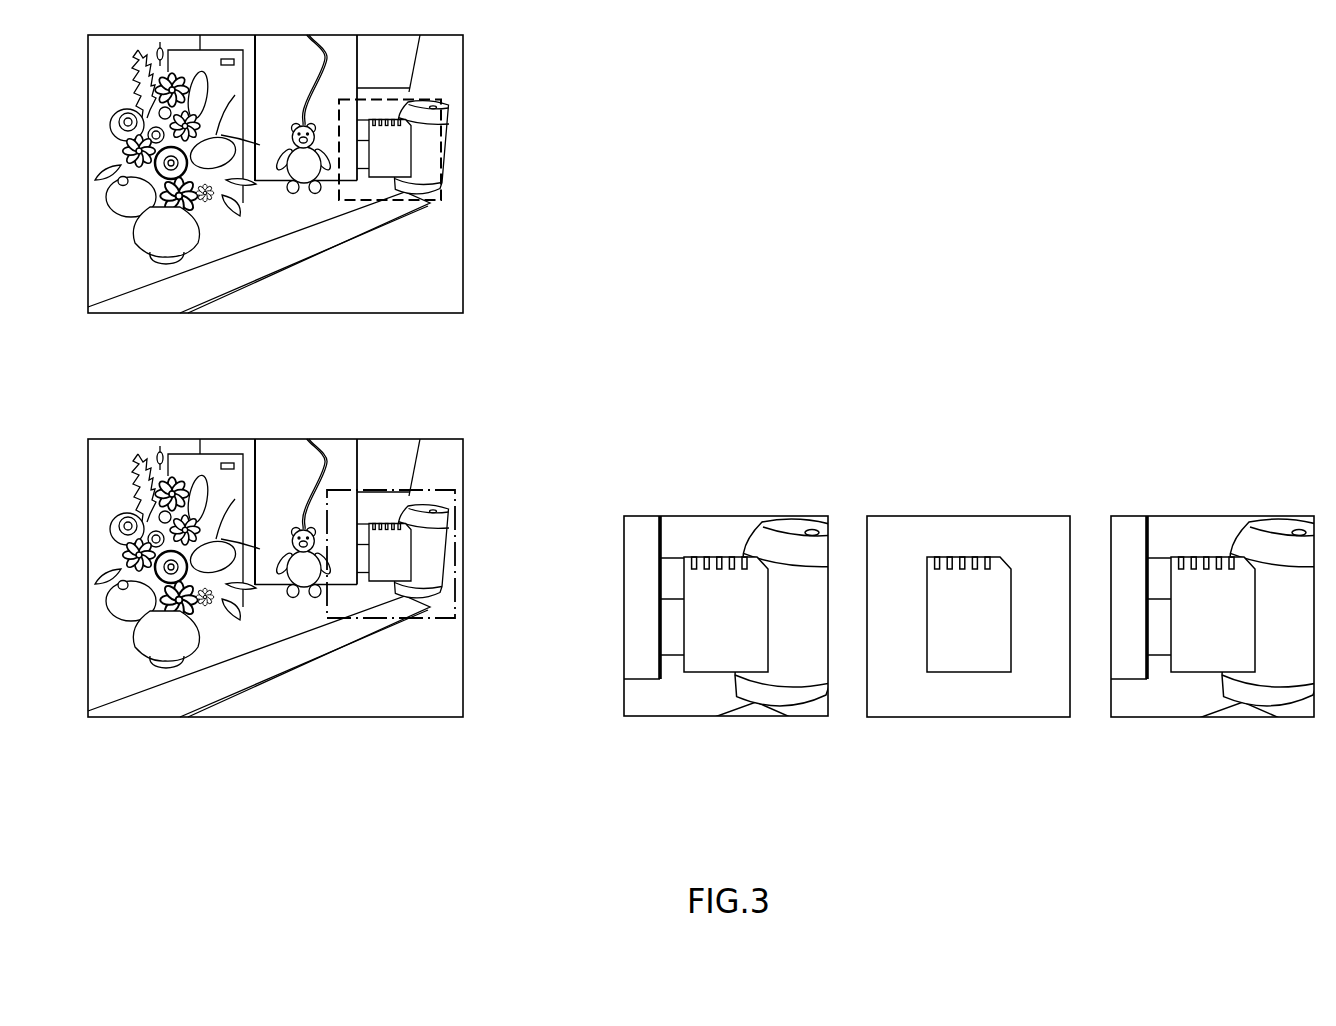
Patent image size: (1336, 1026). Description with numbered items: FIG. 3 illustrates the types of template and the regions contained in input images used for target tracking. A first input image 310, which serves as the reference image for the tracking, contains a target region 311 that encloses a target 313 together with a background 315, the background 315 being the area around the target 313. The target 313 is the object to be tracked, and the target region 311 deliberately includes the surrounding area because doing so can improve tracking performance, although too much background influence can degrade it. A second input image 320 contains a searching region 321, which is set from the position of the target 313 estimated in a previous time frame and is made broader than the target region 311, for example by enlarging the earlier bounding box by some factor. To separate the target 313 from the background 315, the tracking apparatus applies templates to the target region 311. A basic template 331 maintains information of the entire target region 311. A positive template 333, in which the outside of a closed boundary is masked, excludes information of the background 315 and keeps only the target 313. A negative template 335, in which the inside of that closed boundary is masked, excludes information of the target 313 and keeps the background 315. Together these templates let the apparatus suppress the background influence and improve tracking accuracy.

The first input image 310 is at (317, 191).
The target region 311 is at (443, 100).
The target 313 is at (410, 151).
The background 315 is at (427, 167).
The second input image 320 is at (309, 595).
The searching region 321 is at (440, 490).
The basic template 331 is at (723, 515).
The positive template 333 is at (968, 515).
The negative template 335 is at (1210, 515).